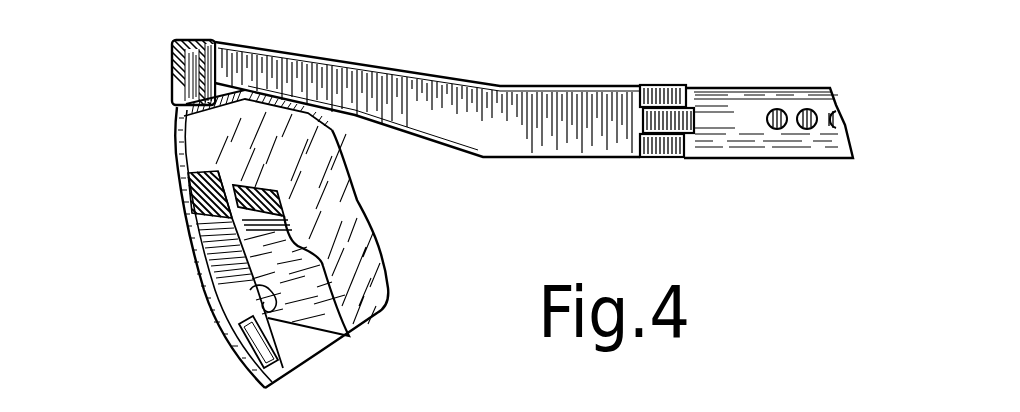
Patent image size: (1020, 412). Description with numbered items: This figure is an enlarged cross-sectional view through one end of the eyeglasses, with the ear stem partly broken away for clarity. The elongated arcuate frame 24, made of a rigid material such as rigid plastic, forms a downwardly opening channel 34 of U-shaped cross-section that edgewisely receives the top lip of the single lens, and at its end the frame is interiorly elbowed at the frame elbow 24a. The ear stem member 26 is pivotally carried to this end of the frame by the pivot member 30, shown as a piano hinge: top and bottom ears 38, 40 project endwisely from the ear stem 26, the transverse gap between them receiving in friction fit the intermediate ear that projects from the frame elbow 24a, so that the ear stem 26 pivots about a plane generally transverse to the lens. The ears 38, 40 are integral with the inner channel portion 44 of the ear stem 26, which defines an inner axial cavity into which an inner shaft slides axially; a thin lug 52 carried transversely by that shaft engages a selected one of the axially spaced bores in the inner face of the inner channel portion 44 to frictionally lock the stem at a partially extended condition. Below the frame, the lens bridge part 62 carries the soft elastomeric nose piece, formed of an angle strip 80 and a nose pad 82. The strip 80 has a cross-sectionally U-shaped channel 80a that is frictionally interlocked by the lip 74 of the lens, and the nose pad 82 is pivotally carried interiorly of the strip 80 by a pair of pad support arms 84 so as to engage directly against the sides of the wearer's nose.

The elongated arcuate frame 24 is at (170, 66).
The frame elbow 24a is at (574, 137).
The ear stem member 26 is at (713, 132).
The pivot member 30 is at (657, 87).
The downwardly opening channel 34 is at (182, 118).
The top ear 38 is at (673, 100).
The bottom ear 40 is at (644, 159).
The inner channel portion 44 is at (718, 102).
The thin lug 52 is at (815, 112).
The bridge part 62 is at (178, 143).
The lip 74 is at (260, 368).
The angle strip 80 is at (190, 190).
The U-shaped channel 80a is at (185, 235).
The nose pad 82 is at (283, 200).
The pad support arms 84 is at (255, 288).